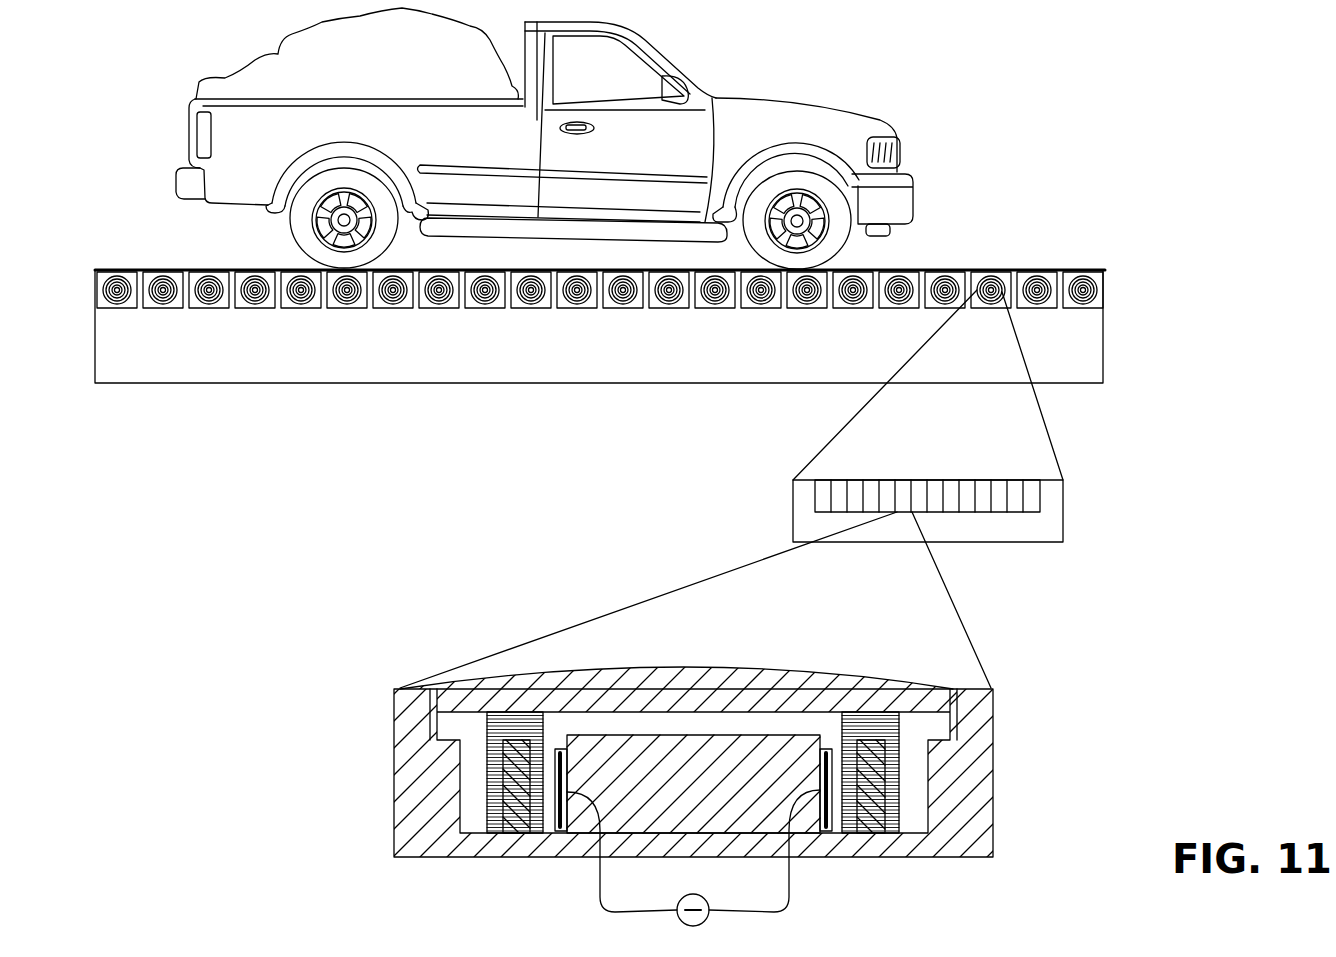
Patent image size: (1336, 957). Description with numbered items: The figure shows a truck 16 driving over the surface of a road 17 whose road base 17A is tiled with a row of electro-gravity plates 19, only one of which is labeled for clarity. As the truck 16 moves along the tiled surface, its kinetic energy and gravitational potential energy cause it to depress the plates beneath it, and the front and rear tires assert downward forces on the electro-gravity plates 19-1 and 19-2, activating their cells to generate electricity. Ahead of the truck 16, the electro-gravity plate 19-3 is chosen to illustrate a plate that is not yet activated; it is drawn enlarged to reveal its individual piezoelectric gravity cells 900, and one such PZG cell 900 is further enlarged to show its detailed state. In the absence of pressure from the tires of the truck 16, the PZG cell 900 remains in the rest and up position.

The truck 16 is at (808, 104).
The road 17 is at (208, 268).
The road base 17A is at (1088, 355).
The electro-gravity plate 19 is at (544, 308).
The electro-gravity plate 19-1 is at (805, 306).
The electro-gravity plate 19-2 is at (345, 306).
The electro-gravity plate 19-3 is at (993, 273).
The PZG cell 900 is at (903, 488).